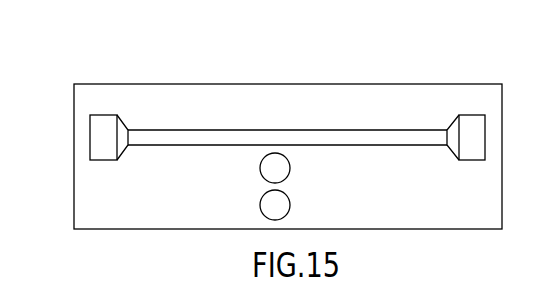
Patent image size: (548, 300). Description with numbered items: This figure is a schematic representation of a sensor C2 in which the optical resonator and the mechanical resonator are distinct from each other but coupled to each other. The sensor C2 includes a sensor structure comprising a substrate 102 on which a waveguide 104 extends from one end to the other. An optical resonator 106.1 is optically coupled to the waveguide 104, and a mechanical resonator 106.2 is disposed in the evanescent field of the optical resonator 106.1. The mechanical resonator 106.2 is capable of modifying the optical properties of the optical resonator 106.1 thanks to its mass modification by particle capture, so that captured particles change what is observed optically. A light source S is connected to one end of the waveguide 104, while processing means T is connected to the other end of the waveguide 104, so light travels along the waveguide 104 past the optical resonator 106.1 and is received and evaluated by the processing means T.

The substrate 102 is at (84, 194).
The waveguide 104 is at (365, 128).
The optical resonator 106.1 is at (290, 173).
The mechanical resonator 106.2 is at (290, 212).
The light source S is at (102, 130).
The processing means T is at (465, 128).
The sensor C2 is at (219, 73).